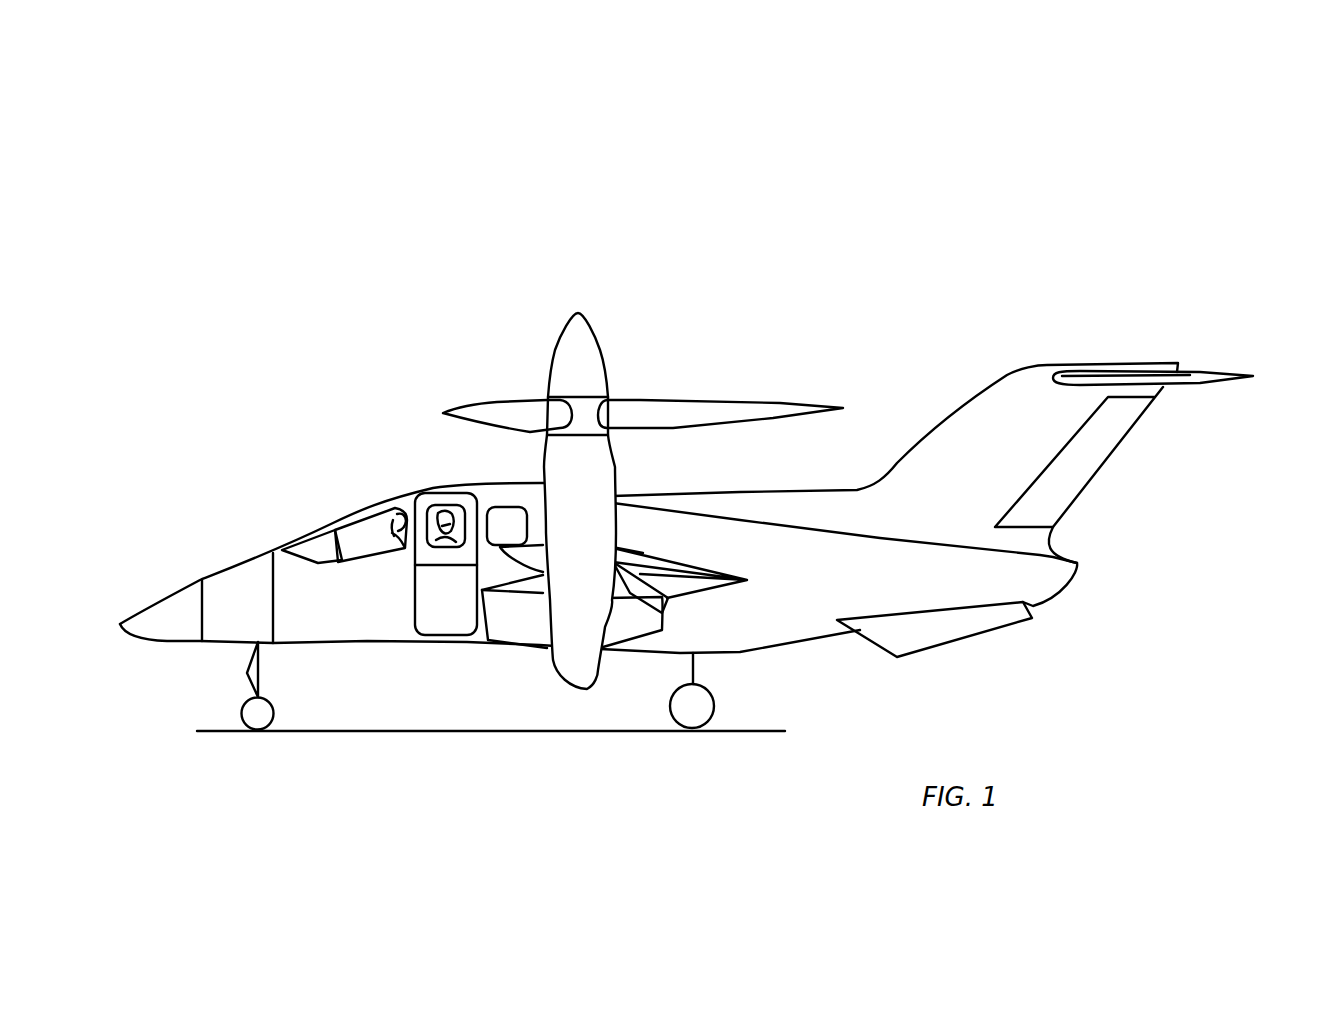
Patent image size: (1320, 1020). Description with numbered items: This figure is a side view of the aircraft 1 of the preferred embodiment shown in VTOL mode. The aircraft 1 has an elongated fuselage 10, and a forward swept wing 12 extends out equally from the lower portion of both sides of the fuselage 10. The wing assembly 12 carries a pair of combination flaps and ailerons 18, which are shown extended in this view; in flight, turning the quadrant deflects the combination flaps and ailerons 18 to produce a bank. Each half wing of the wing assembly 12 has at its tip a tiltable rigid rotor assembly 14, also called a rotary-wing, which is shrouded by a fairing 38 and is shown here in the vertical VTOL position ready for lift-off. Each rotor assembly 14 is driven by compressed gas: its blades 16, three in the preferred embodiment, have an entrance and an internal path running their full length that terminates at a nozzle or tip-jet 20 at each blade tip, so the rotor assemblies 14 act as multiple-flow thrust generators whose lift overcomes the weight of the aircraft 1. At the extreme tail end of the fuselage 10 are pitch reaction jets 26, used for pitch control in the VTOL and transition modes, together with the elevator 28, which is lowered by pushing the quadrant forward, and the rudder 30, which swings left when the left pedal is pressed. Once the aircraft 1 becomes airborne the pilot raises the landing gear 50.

The aircraft 1 is at (723, 208).
The fuselage 10 is at (360, 628).
The forward swept wing 12 is at (527, 622).
The tiltable rigid rotor assembly 14 is at (613, 400).
The blades 16 is at (487, 413).
The combination flaps and ailerons 18 is at (653, 613).
The tip-jet 20 is at (450, 415).
The pitch reaction jets 26 is at (1077, 563).
The elevator 28 is at (1207, 377).
The rudder 30 is at (1080, 470).
The fairing 38 is at (572, 640).
The landing gear 50 is at (267, 676).